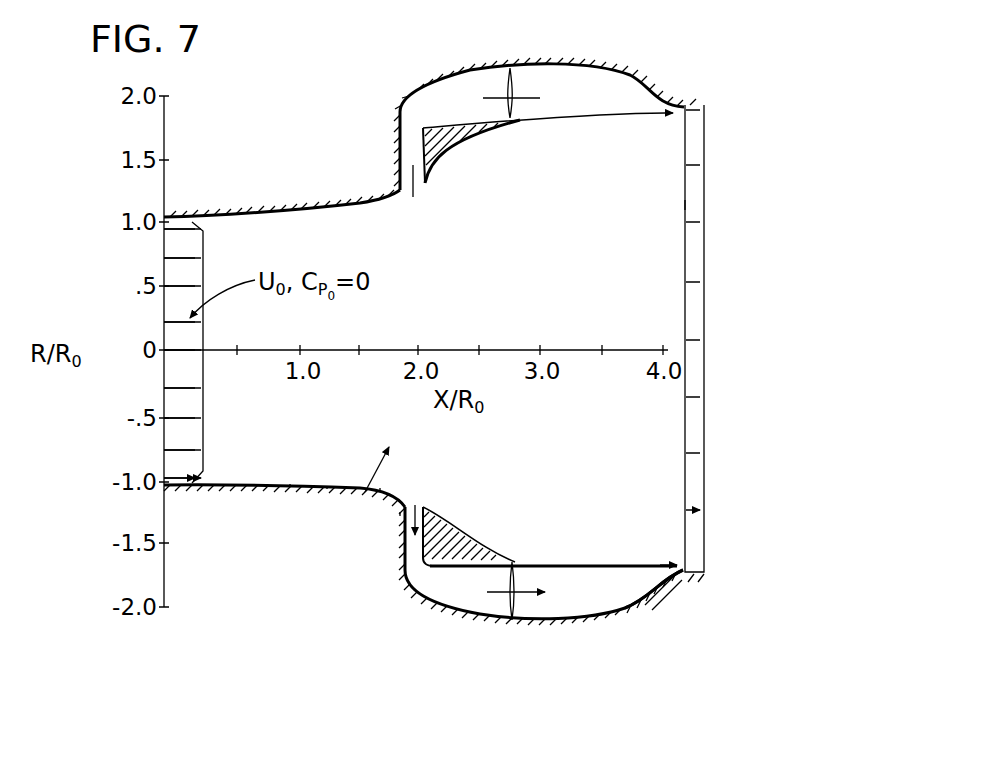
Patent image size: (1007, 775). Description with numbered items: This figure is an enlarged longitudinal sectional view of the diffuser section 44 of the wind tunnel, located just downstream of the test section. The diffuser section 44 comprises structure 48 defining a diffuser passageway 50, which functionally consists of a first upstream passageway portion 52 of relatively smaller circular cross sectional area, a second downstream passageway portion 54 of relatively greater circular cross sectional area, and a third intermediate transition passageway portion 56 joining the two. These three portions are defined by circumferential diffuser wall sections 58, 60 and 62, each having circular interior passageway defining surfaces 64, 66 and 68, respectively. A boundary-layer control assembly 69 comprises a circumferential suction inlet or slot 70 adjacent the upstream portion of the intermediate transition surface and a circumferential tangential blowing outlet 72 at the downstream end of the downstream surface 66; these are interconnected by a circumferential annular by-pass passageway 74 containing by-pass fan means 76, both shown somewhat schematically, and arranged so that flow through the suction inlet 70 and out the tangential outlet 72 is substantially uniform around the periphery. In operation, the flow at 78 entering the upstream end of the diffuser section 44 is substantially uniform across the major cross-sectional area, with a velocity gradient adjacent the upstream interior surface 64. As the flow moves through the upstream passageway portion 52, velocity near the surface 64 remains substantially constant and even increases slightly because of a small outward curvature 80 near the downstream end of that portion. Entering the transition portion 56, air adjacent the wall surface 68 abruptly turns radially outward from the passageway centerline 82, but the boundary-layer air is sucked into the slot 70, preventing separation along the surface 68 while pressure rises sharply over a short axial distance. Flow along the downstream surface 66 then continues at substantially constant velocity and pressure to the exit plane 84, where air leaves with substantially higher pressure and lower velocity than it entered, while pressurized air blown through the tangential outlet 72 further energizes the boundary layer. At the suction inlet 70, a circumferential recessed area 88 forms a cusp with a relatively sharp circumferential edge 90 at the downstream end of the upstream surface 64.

The diffuser section 44 is at (280, 510).
The structure 48 is at (250, 490).
The diffuser passageway 50 is at (380, 490).
The first upstream passageway portion 52 is at (268, 212).
The second downstream passageway portion 54 is at (640, 205).
The third intermediate transition passageway portion 56 is at (487, 158).
The diffuser wall section 58 is at (327, 490).
The diffuser wall section 60 is at (632, 570).
The diffuser wall section 62 is at (470, 547).
The interior passageway defining surface 64 is at (293, 487).
The interior passageway defining surface 66 is at (615, 565).
The interior passageway defining surface 68 is at (473, 538).
The boundary-layer control assembly 69 is at (453, 517).
The circumferential suction inlet or slot 70 is at (420, 185).
The circumferential tangential blowing outlet 72 is at (690, 105).
The by-pass passageway 74 is at (583, 65).
The by-pass fan means 76 is at (520, 120).
The flow 78 is at (170, 305).
The outward curvature 80 is at (382, 202).
The passageway centerline 82 is at (385, 350).
The exit plane 84 is at (685, 318).
The circumferential recessed area 88 is at (400, 515).
The sharp circumferential edge 90 is at (415, 500).